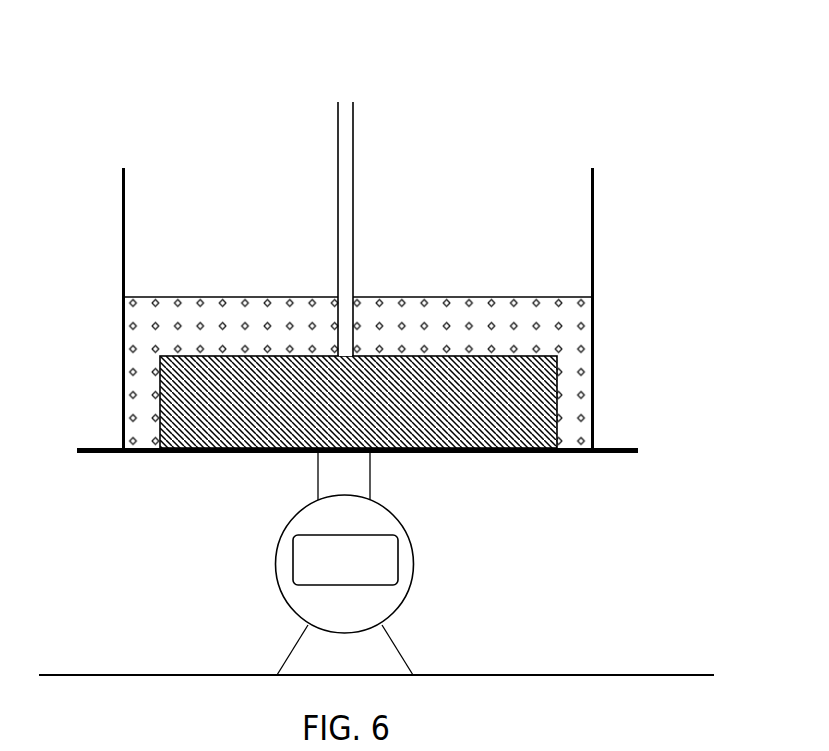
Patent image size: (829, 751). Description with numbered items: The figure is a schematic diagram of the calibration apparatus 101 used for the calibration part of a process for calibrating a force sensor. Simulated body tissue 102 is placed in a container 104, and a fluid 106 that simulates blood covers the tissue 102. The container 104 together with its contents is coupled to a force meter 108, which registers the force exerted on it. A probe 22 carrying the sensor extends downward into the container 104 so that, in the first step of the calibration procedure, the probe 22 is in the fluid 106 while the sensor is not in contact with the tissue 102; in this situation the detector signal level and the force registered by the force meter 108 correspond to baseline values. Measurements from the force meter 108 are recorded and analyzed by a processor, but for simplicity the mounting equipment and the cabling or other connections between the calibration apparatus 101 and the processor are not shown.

The calibration apparatus 101 is at (186, 156).
The probe 22 is at (353, 184).
The container 104 is at (594, 212).
The fluid 106 is at (573, 323).
The simulated body tissue 102 is at (592, 403).
The force meter 108 is at (415, 563).